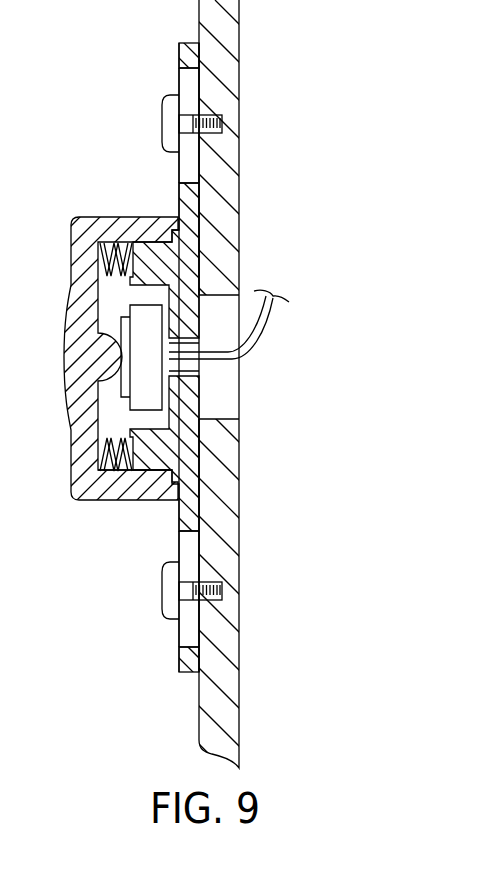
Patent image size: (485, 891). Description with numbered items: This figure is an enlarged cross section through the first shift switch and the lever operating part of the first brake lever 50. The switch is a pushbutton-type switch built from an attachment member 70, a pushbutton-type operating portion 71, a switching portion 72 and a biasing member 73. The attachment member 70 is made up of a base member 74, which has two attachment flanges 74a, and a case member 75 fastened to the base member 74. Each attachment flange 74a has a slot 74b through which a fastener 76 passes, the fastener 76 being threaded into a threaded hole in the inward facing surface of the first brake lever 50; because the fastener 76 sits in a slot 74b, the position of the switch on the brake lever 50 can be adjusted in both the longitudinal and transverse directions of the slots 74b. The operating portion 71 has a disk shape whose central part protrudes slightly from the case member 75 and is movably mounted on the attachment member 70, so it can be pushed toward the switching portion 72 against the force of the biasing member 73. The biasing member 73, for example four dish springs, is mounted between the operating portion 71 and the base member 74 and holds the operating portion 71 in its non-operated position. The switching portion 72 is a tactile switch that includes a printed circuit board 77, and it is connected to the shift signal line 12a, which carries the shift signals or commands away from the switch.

The shift signal line 12a is at (263, 338).
The first brake lever 50 is at (218, 203).
The attachment member 70 is at (242, 400).
The pushbutton-type operating portion 71 is at (65, 385).
The switching portion 72 is at (145, 360).
The biasing member 73 is at (122, 484).
The base member 74 is at (179, 193).
The attachment flange 74a is at (192, 43).
The slot 74b is at (179, 82).
The case member 75 is at (140, 216).
The fastener 76 is at (161, 117).
The printed circuit board 77 is at (167, 327).